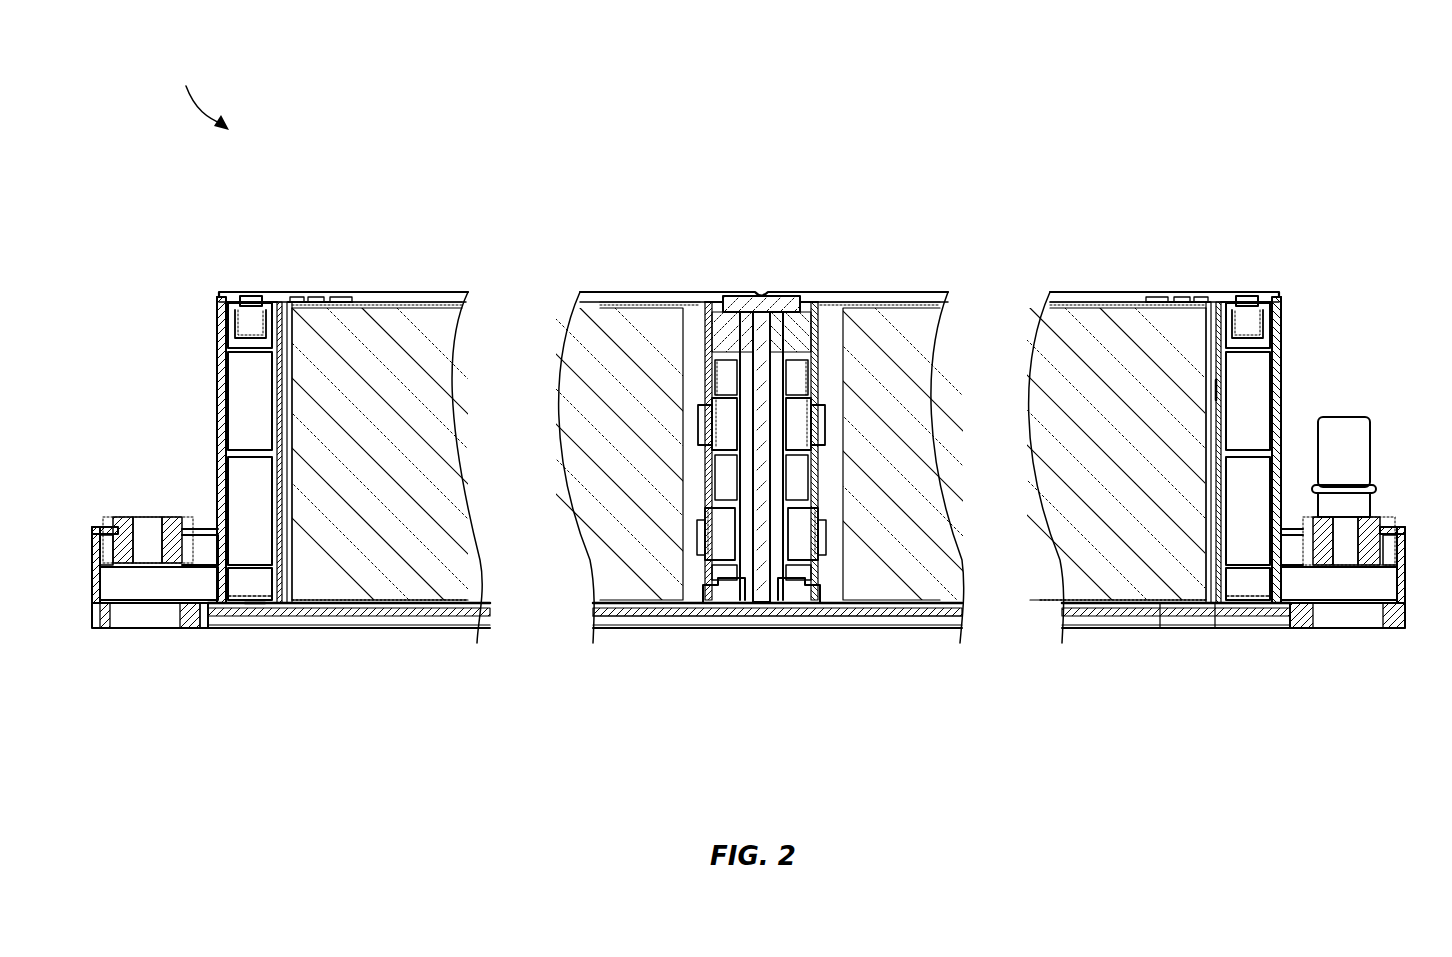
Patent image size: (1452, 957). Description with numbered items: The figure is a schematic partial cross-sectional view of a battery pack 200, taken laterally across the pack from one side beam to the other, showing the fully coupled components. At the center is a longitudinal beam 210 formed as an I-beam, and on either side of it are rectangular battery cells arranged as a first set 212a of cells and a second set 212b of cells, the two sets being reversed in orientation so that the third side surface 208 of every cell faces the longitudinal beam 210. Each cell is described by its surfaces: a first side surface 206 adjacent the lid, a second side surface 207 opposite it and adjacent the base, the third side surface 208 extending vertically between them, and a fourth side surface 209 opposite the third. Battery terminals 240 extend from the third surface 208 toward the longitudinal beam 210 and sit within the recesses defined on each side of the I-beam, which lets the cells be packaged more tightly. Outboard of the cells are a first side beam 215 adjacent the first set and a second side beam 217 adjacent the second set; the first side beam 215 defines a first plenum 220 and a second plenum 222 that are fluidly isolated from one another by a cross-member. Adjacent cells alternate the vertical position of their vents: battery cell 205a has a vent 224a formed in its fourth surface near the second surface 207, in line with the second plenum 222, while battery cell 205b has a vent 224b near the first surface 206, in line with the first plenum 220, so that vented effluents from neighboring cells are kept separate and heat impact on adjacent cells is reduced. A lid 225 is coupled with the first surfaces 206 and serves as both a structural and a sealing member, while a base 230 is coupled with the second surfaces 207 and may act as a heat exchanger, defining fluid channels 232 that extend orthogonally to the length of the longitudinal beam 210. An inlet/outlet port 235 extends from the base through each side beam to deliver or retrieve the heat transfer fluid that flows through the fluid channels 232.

The battery pack 200 is at (195, 95).
The battery cell 205a is at (385, 301).
The battery cell 205b is at (1105, 301).
The first side surface 206 is at (600, 301).
The second side surface 207 is at (428, 604).
The third side surface 208 is at (722, 298).
The fourth side surface 209 is at (268, 298).
The longitudinal beam 210 is at (778, 295).
The first set of cells 212a is at (322, 298).
The second set of cells 212b is at (1180, 298).
The first side beam 215 is at (221, 420).
The second side beam 217 is at (1280, 305).
The first plenum 220 is at (218, 355).
The second plenum 222 is at (228, 500).
The vent 224a is at (272, 580).
The vent 224b is at (1228, 390).
The lid 225 is at (893, 301).
The base 230 is at (1160, 630).
The fluid channels 232 is at (878, 630).
The inlet/outlet port 235 is at (147, 527).
The battery terminals 240 is at (668, 625).